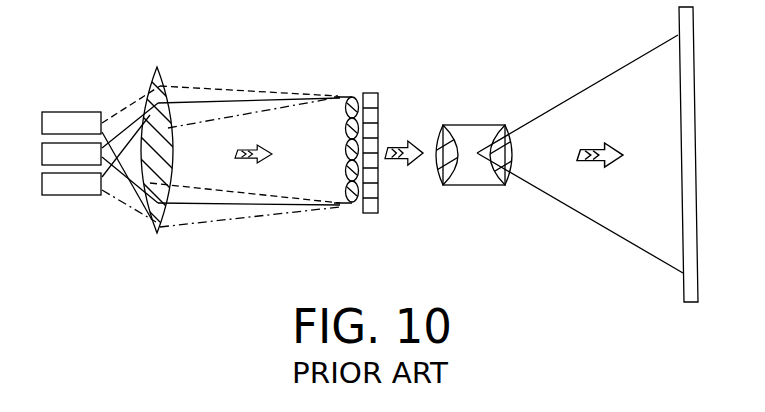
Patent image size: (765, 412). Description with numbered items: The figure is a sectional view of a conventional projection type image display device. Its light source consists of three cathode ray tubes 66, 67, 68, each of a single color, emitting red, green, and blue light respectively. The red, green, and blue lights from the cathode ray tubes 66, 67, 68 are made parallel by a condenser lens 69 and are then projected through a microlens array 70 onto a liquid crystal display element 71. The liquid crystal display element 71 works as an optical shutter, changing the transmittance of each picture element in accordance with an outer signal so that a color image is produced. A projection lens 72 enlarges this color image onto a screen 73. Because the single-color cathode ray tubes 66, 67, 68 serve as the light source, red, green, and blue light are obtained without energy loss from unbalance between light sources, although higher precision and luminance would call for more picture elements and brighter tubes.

The cathode ray tube 66 is at (85, 118).
The cathode ray tube 67 is at (58, 148).
The cathode ray tube 68 is at (70, 190).
The condenser lens 69 is at (152, 225).
The microlens array 70 is at (346, 181).
The liquid crystal display element 71 is at (371, 214).
The projection lens 72 is at (480, 186).
The screen 73 is at (683, 240).